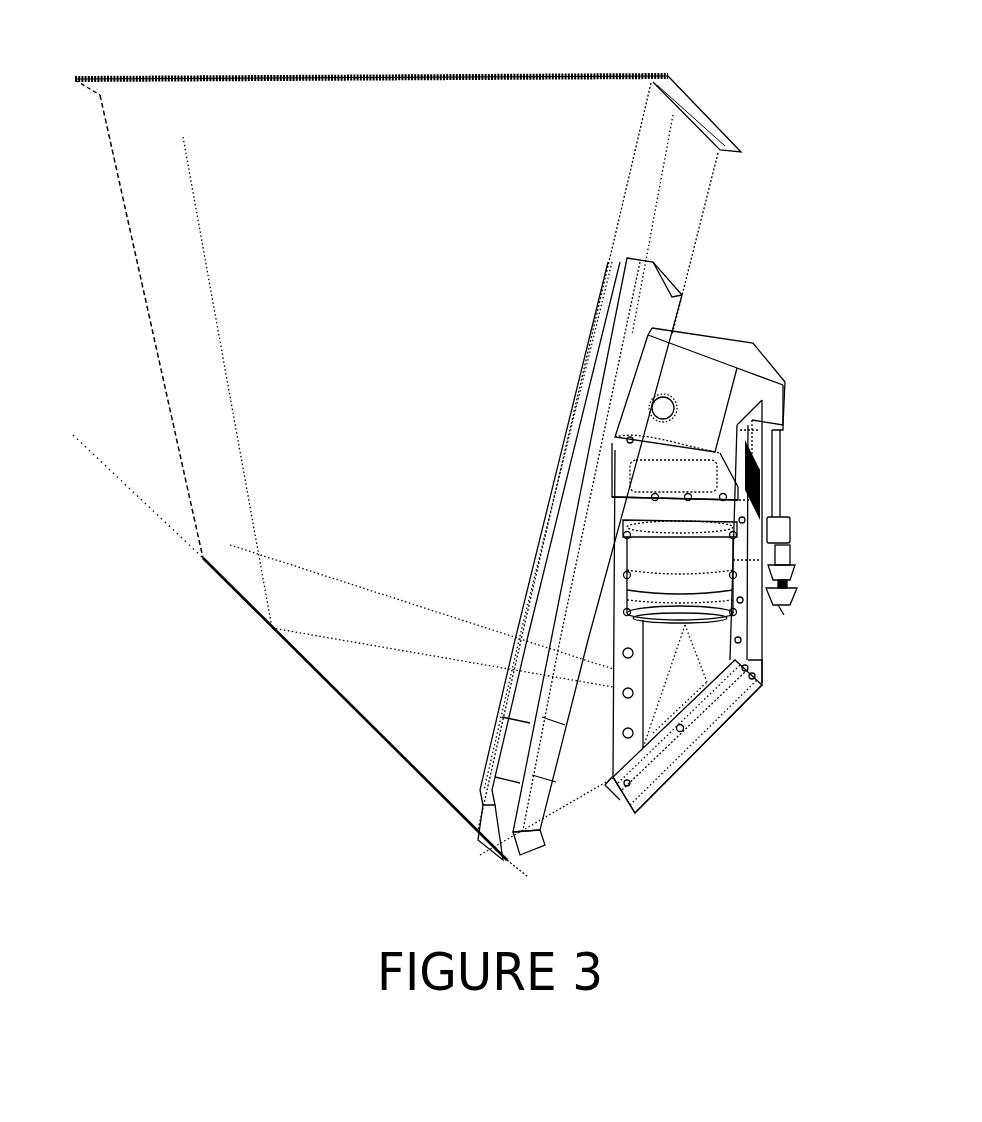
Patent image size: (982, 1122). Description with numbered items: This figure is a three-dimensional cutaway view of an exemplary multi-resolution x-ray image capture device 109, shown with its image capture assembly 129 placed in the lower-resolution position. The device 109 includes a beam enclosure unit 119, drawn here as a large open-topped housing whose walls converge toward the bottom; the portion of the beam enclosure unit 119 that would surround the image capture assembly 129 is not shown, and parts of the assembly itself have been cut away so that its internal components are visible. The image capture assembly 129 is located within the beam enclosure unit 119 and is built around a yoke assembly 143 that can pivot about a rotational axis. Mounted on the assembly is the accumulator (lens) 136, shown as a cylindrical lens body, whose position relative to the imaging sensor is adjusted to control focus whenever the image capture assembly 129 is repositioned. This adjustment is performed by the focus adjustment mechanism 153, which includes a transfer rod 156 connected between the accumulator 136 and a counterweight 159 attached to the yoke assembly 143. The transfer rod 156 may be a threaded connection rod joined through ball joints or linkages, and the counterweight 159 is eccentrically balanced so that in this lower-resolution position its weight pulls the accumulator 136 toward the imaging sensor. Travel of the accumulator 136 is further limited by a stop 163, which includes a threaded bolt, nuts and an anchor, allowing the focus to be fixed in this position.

The multi-resolution x-ray image capture device 109 is at (613, 57).
The beam enclosure unit 119 is at (128, 218).
The image capture assembly 129 is at (723, 300).
The counterweight 159 is at (715, 337).
The focus adjustment mechanism 153 is at (826, 413).
The transfer rod 156 is at (775, 437).
The stop 163 is at (778, 593).
The accumulator (lens) 136 is at (690, 563).
The yoke assembly 143 is at (613, 757).